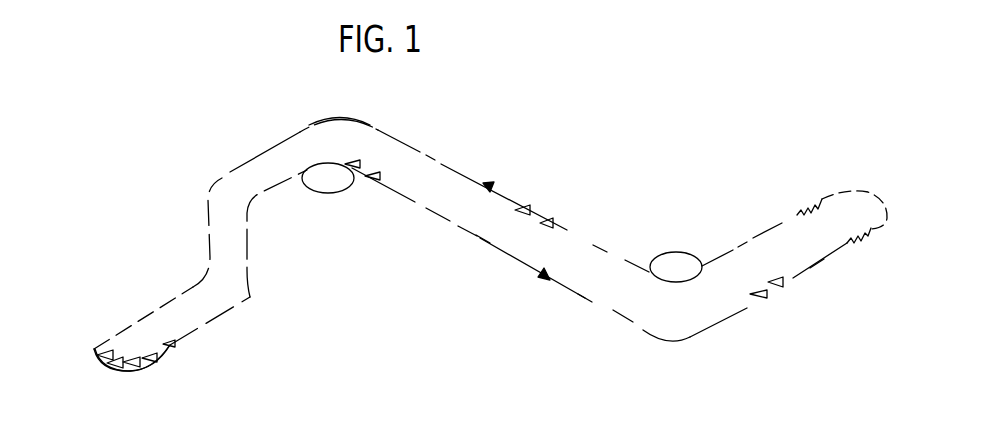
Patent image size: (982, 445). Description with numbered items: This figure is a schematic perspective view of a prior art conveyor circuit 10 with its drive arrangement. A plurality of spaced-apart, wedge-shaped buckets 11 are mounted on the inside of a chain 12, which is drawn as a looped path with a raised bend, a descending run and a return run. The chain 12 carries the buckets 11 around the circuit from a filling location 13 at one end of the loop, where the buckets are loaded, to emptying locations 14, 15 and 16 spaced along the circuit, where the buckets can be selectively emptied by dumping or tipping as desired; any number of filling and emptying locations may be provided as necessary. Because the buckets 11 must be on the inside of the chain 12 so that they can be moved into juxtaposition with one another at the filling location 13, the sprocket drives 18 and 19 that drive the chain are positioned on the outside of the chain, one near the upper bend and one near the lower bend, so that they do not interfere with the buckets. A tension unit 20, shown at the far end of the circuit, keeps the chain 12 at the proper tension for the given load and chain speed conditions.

The conveyor circuit 10 is at (516, 157).
The buckets 11 is at (168, 347).
The chain 12 is at (373, 128).
The filling location 13 is at (90, 361).
The emptying location 14 is at (482, 240).
The emptying location 15 is at (585, 300).
The emptying location 16 is at (817, 265).
The sprocket drive 18 is at (337, 182).
The sprocket drive 19 is at (672, 263).
The tension unit 20 is at (858, 240).